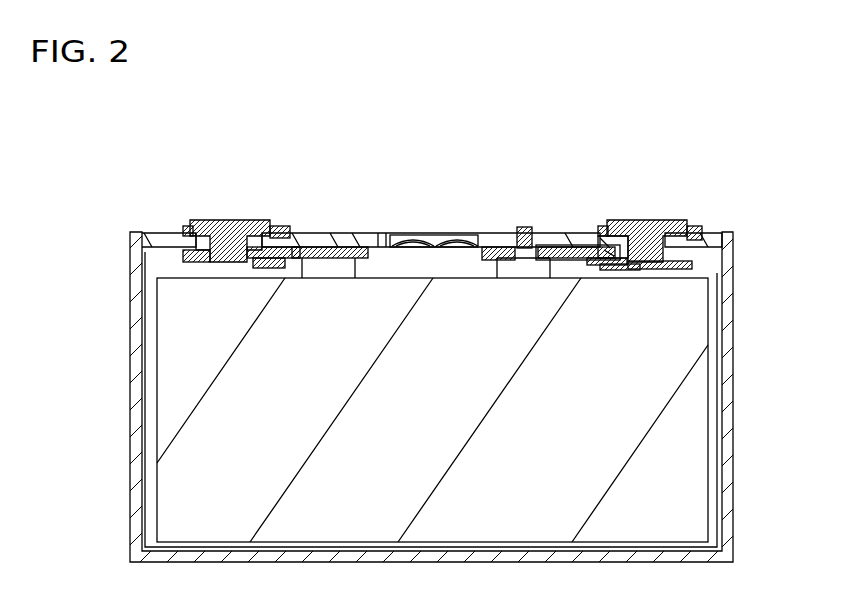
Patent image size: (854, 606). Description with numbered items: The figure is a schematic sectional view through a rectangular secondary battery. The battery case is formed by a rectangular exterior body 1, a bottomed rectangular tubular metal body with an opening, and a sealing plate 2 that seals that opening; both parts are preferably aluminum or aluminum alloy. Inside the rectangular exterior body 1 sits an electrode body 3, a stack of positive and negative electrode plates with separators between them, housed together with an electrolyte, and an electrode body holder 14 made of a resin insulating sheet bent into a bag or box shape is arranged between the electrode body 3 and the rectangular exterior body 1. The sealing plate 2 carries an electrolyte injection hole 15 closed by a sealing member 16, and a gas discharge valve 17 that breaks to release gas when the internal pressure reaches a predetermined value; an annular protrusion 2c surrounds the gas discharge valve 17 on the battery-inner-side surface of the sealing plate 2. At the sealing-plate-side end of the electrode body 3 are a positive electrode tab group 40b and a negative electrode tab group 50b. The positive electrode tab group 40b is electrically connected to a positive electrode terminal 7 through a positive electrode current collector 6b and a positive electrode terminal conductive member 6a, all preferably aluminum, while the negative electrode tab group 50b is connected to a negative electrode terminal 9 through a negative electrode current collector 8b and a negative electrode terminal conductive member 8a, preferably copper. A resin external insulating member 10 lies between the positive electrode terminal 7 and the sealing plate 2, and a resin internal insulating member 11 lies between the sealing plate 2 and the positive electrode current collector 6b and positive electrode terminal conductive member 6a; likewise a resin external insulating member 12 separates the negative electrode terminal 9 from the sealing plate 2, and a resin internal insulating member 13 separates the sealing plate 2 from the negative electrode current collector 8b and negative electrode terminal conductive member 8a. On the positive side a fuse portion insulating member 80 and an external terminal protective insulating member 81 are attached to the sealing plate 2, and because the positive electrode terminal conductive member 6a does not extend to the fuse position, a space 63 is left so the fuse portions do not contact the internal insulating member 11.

The rectangular exterior body 1 is at (728, 420).
The sealing plate 2 is at (375, 245).
The annular protrusion 2c is at (387, 247).
The electrode body 3 is at (172, 497).
The positive electrode terminal conductive member 6a is at (698, 262).
The positive electrode current collector 6b is at (575, 248).
The positive electrode terminal 7 is at (645, 240).
The negative electrode terminal conductive member 8a is at (200, 254).
The negative electrode current collector 8b is at (298, 250).
The negative electrode terminal 9 is at (228, 240).
The external insulating member 10 is at (690, 230).
The internal insulating member 11 is at (552, 250).
The external insulating member 12 is at (192, 228).
The internal insulating member 13 is at (352, 250).
The electrode body holder 14 is at (718, 460).
The electrolyte injection hole 15 is at (497, 250).
The sealing member 16 is at (525, 228).
The gas discharge valve 17 is at (432, 240).
The positive electrode tab group 40b is at (507, 276).
The negative electrode tab group 50b is at (318, 270).
The space 63 is at (598, 256).
The fuse portion insulating member 80 is at (598, 274).
The external terminal protective insulating member 81 is at (631, 274).